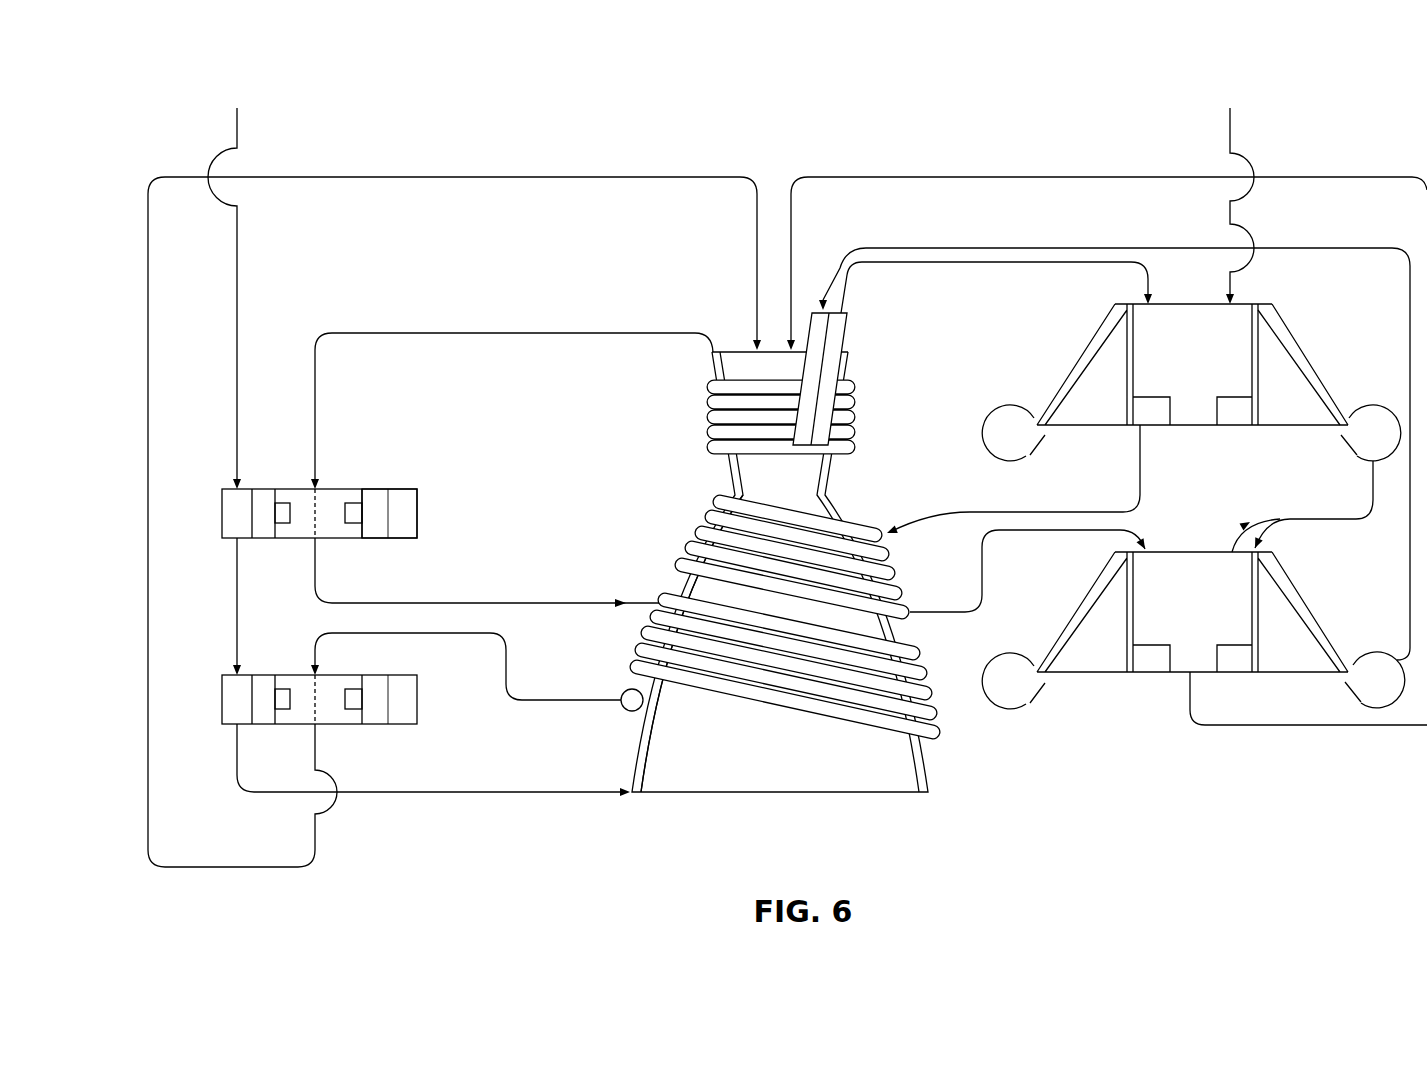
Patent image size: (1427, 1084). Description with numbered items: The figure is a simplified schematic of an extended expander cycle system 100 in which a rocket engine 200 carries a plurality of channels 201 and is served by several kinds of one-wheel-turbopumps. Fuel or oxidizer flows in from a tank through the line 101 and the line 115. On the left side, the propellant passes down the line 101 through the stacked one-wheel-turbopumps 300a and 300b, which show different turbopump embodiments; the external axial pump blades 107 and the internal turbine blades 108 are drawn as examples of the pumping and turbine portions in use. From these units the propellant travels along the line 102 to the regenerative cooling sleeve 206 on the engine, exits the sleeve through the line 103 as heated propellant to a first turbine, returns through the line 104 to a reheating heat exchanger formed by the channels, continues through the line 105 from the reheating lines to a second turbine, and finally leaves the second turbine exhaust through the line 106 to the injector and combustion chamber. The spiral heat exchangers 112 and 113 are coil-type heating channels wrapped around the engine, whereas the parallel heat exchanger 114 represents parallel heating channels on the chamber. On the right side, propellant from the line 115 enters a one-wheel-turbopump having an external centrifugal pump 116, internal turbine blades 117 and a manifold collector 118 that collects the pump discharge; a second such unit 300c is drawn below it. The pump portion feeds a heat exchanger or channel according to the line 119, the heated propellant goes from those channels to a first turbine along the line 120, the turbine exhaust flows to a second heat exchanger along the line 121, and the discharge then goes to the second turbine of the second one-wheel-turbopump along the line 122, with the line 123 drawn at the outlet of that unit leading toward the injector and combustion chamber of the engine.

The extended expander cycle system 100 is at (152, 149).
The line 101 is at (218, 374).
The line 102 is at (433, 781).
The line 103 is at (512, 411).
The line 104 is at (490, 572).
The line 105 is at (477, 681).
The line 106 is at (787, 507).
The external axial pump blades 107 is at (402, 519).
The internal turbine blades 108 is at (355, 503).
The spiral heat exchanger 112 is at (745, 690).
The spiral heat exchanger 113 is at (683, 565).
The parallel heat exchanger 114 is at (856, 382).
The line 115 is at (1237, 192).
The external centrifugal pump 116 is at (1307, 356).
The internal turbine blades 117 is at (1237, 413).
The manifold collector 118 is at (1378, 414).
The line 119 is at (1408, 533).
The line 120 is at (990, 264).
The line 121 is at (1013, 479).
The line 122 is at (1027, 571).
The outlet line 123 is at (1308, 712).
The rocket engine 200 is at (852, 756).
The channels 201 is at (908, 723).
The regenerative cooling sleeve 206 is at (636, 760).
The one-wheel-turbopump 300a is at (330, 492).
The one-wheel-turbopump 300b is at (290, 701).
The heat exchanger 300c is at (1093, 648).